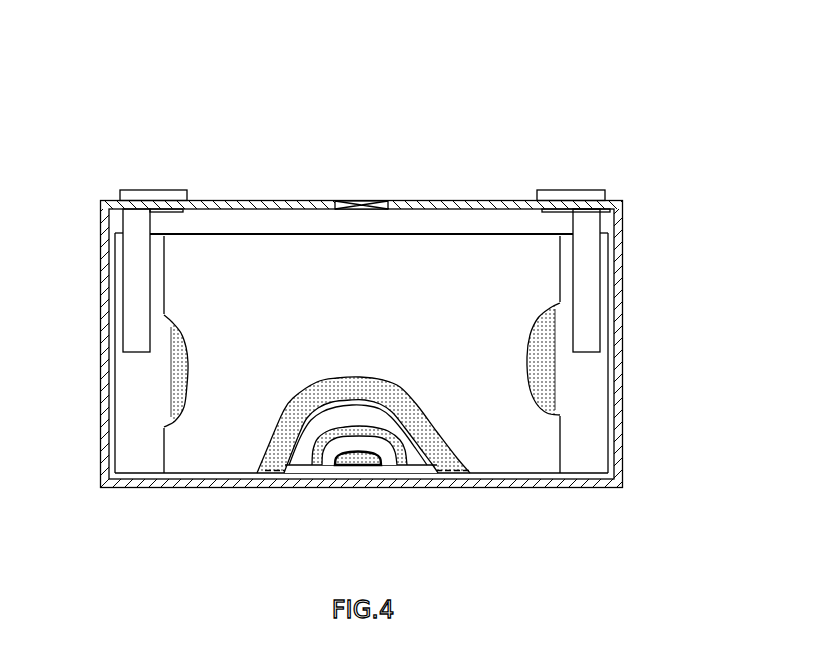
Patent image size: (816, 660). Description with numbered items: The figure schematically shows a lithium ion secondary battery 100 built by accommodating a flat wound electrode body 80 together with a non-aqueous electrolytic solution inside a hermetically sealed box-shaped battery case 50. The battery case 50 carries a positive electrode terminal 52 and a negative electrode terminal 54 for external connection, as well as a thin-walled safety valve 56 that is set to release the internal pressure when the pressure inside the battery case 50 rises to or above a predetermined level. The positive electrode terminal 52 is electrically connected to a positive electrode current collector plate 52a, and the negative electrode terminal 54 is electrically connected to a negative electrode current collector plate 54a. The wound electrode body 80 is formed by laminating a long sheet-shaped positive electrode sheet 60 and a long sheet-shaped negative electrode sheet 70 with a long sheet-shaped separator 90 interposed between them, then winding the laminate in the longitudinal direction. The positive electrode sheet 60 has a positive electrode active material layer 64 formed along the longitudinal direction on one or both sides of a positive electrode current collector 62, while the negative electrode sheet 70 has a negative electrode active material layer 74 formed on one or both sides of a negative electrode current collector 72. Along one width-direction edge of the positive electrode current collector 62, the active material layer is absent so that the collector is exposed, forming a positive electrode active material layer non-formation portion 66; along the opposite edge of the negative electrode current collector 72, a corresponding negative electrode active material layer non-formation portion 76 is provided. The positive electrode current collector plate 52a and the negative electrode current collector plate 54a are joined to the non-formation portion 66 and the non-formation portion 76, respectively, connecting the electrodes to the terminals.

The lithium ion secondary battery 100 is at (93, 63).
The battery case 50 is at (105, 200).
The positive electrode terminal 52 is at (165, 188).
The positive electrode current collector plate 52a is at (135, 272).
The negative electrode terminal 54 is at (583, 190).
The negative electrode current collector plate 54a is at (592, 267).
The thin-walled safety valve 56 is at (370, 202).
The positive electrode sheet 60 is at (272, 470).
The positive electrode current collector 62 is at (115, 375).
The positive electrode active material layer 64 is at (192, 345).
The positive electrode active material layer non-formation portion 66 is at (127, 442).
The negative electrode sheet 70 is at (333, 465).
The negative electrode current collector 72 is at (608, 377).
The negative electrode active material layer 74 is at (527, 343).
The negative electrode active material layer non-formation portion 76 is at (592, 438).
The wound electrode body 80 is at (283, 228).
The separator 90 is at (303, 458).